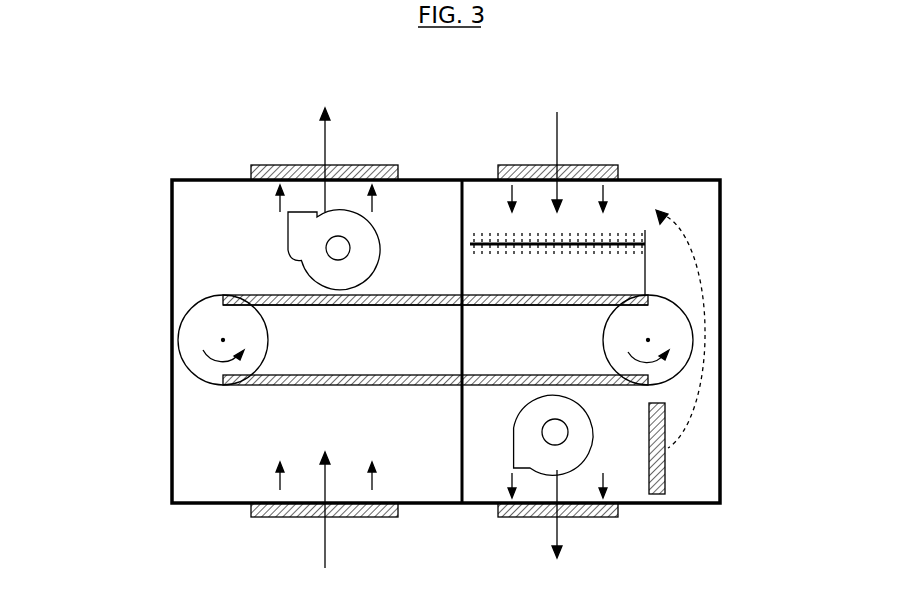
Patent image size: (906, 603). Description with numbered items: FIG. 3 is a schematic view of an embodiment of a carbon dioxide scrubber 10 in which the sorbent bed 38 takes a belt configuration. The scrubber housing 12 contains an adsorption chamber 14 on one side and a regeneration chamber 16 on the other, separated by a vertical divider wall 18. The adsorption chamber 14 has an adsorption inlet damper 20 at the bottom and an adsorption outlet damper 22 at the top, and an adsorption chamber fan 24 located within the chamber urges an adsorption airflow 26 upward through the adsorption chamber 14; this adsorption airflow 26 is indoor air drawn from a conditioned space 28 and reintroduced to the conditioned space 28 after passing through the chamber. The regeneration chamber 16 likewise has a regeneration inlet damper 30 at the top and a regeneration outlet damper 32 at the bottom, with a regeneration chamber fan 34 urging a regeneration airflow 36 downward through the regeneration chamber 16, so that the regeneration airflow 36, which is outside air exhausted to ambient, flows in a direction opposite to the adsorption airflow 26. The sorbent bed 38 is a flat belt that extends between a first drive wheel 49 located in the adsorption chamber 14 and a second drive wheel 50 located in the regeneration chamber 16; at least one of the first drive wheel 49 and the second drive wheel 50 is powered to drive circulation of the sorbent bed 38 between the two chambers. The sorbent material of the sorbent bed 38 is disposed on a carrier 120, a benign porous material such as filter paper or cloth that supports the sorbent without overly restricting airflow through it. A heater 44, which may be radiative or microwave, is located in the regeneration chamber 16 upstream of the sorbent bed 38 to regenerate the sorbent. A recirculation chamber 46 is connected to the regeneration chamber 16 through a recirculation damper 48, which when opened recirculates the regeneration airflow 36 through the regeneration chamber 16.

The CO2 scrubber 10 is at (98, 103).
The scrubber housing 12 is at (170, 442).
The adsorption chamber 14 is at (393, 436).
The regeneration chamber 16 is at (503, 441).
The divider wall 18 is at (461, 488).
The adsorption inlet damper 20 is at (253, 516).
The adsorption outlet damper 22 is at (392, 165).
The adsorption chamber fan 24 is at (343, 264).
The adsorption airflow 26 is at (328, 136).
The conditioned space 28 is at (263, 135).
The regeneration inlet damper 30 is at (615, 165).
The regeneration outlet damper 32 is at (615, 517).
The regeneration chamber fan 34 is at (581, 450).
The regeneration airflow 36 is at (560, 136).
The sorbent bed 38 is at (423, 296).
The heater 44 is at (645, 232).
The recirculation chamber 46 is at (706, 345).
The recirculation damper 48 is at (657, 492).
The first drive wheel 49 is at (197, 334).
The second drive wheel 50 is at (662, 322).
The carrier 120 is at (330, 306).